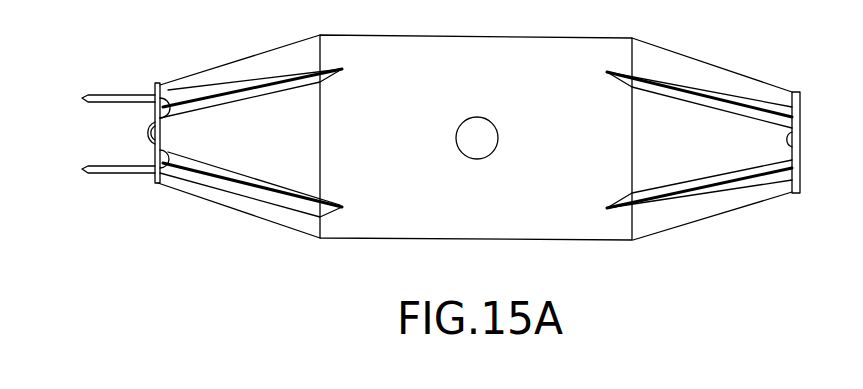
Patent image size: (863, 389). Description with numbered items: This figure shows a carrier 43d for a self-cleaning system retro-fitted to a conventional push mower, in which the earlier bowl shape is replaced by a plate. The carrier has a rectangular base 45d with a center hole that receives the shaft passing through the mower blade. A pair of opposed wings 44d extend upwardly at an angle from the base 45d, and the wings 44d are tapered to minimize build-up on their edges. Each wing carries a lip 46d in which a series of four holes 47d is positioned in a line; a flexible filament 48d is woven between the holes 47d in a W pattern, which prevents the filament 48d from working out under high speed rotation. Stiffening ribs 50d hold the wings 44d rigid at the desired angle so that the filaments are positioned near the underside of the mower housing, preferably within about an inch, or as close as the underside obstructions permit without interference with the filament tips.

The connector assembly 43d is at (193, 211).
The opposed wings 44d is at (275, 144).
The base 45d is at (430, 194).
The lip 46d is at (178, 87).
The holes 47d is at (853, 208).
The flexible filament 48d is at (100, 93).
The stiffening ribs 50d is at (278, 97).